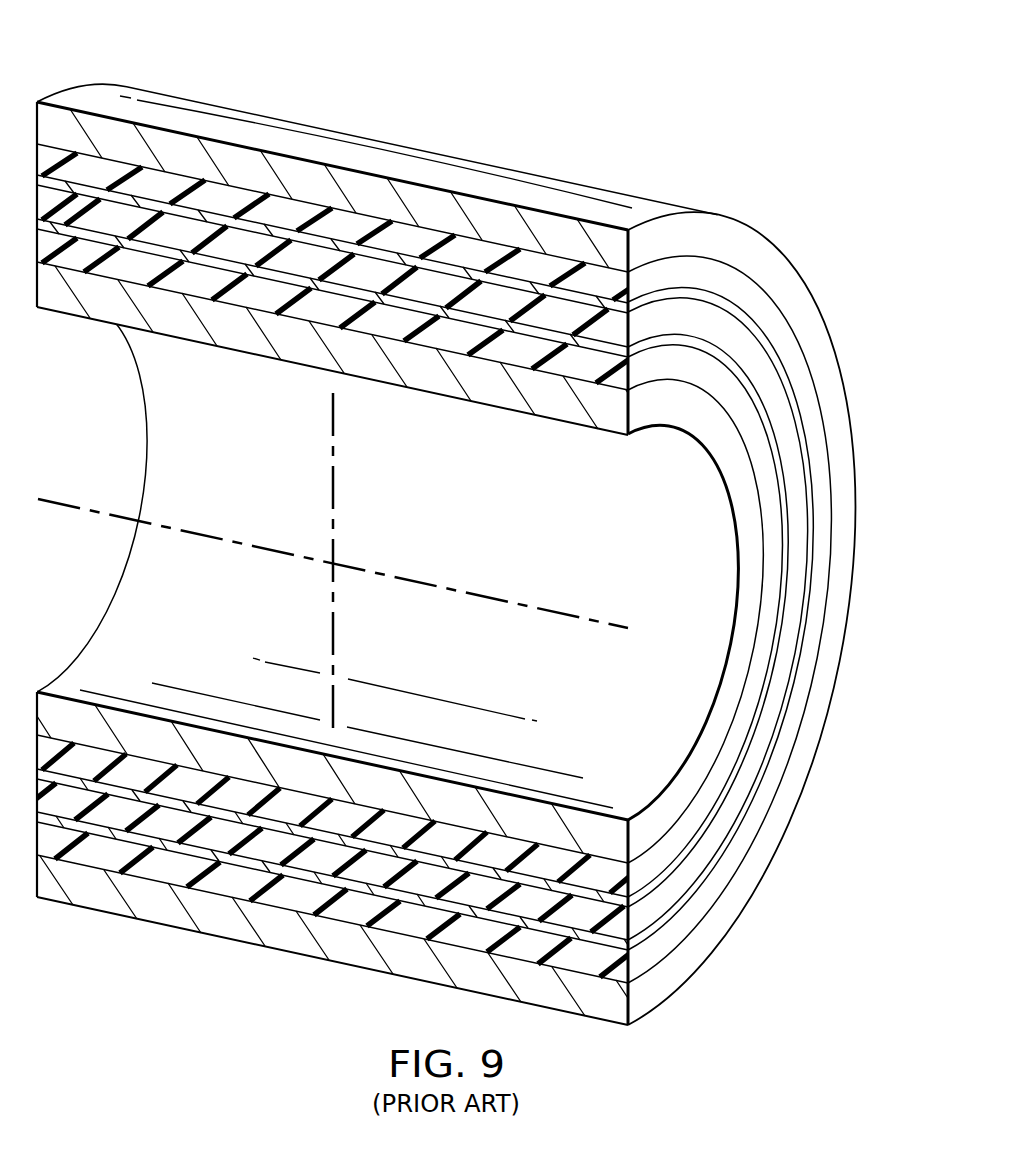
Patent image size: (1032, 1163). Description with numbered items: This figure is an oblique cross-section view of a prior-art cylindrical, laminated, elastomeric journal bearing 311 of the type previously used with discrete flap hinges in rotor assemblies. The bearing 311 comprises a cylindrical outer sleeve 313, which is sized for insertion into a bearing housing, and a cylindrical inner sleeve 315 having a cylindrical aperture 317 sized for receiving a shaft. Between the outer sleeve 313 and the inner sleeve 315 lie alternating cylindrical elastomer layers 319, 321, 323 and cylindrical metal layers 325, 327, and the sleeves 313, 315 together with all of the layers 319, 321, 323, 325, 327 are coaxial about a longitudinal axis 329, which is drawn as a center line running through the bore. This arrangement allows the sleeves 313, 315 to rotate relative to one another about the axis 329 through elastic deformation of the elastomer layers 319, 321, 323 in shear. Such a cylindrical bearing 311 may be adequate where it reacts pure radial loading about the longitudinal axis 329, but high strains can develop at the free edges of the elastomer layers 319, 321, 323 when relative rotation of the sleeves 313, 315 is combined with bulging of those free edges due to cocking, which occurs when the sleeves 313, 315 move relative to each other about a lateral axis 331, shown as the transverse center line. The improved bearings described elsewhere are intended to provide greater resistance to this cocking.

The bearing 311 is at (567, 84).
The outer sleeve 313 is at (579, 181).
The inner sleeve 315 is at (655, 826).
The aperture 317 is at (97, 663).
The elastomer layer 319 is at (767, 314).
The elastomer layer 321 is at (772, 393).
The elastomer layer 323 is at (683, 410).
The metal layer 325 is at (758, 782).
The metal layer 327 is at (757, 715).
The longitudinal axis 329 is at (487, 596).
The lateral axis 331 is at (337, 499).